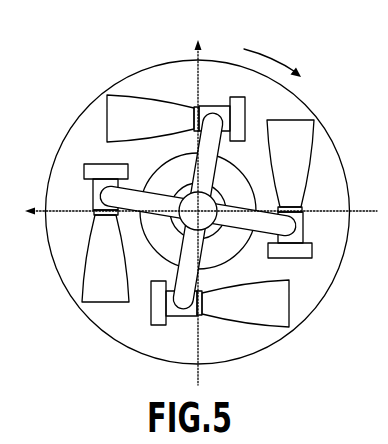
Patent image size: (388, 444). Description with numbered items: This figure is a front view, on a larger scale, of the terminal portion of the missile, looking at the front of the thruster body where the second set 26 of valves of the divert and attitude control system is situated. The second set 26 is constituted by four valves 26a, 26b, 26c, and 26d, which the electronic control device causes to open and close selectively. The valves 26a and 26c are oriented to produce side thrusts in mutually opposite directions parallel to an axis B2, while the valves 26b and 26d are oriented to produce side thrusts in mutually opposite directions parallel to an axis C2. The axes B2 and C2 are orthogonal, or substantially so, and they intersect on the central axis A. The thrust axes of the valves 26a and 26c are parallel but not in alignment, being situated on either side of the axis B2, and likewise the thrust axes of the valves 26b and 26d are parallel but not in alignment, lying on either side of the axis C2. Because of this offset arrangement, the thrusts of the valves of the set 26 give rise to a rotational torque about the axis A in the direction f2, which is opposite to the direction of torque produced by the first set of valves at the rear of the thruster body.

The second set of valves 26 is at (92, 117).
The valve 26a is at (110, 289).
The valve 26b is at (276, 310).
The valve 26c is at (295, 132).
The valve 26d is at (125, 107).
The axis A is at (200, 209).
The axis B2 is at (197, 199).
The axis C2 is at (197, 201).
The direction f2 is at (272, 56).